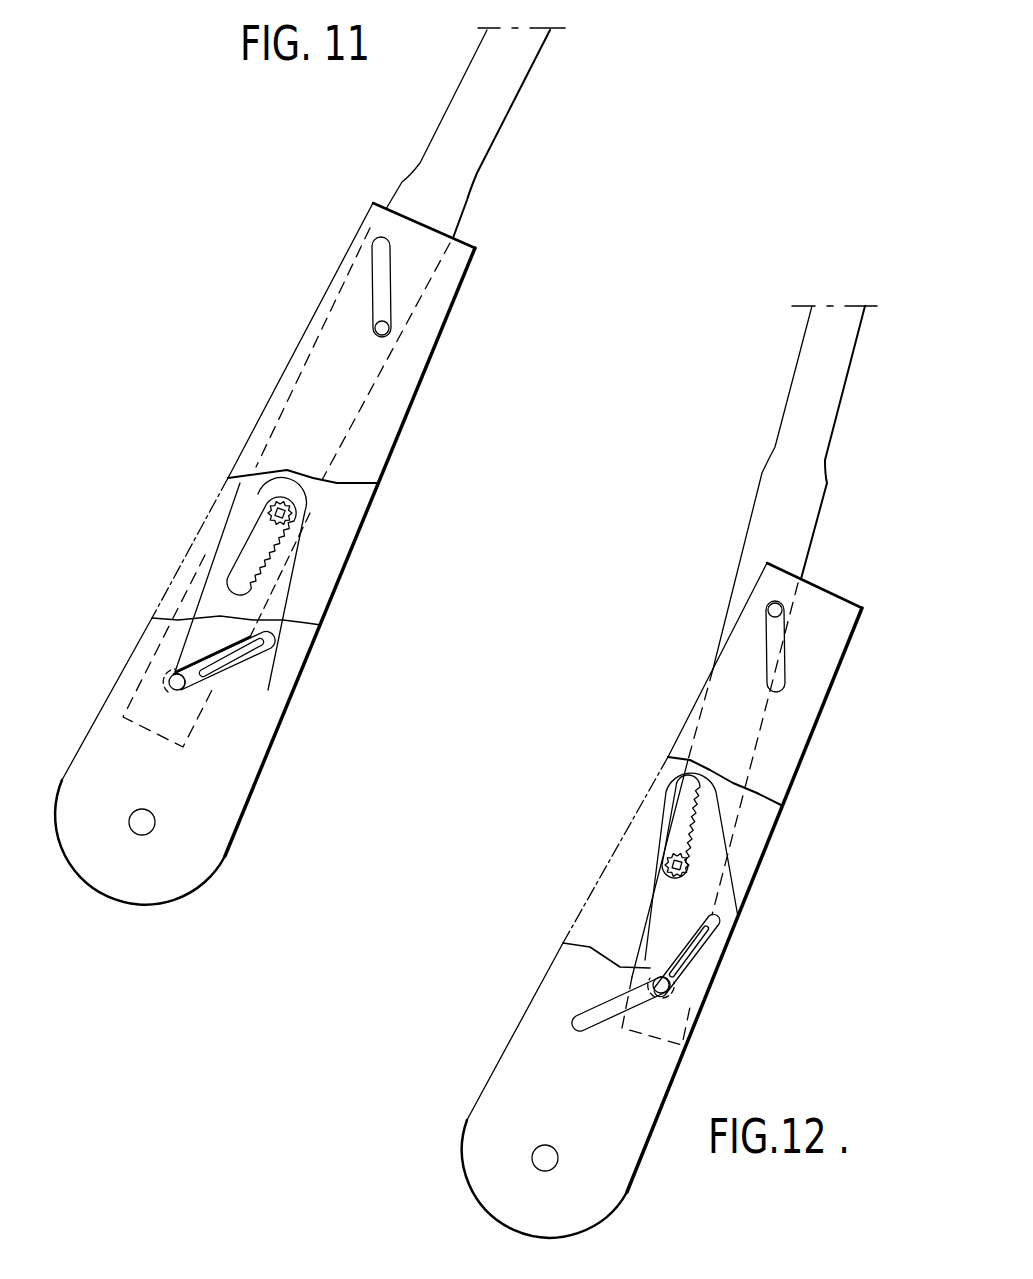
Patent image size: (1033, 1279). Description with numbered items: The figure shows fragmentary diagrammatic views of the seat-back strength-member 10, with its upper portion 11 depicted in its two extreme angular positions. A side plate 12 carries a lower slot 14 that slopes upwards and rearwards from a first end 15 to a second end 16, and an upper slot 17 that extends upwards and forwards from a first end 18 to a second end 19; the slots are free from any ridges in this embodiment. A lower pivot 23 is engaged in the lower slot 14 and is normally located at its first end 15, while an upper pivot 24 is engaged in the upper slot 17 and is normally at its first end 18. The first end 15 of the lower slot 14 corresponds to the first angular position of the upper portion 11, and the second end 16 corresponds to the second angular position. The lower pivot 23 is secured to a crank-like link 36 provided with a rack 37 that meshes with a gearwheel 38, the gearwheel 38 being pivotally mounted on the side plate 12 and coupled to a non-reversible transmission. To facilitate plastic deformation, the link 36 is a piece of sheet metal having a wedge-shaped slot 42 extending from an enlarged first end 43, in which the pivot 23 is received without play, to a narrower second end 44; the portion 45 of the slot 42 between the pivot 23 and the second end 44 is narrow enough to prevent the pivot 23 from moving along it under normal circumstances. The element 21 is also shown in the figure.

In FIG. 11, the strength-member 10 is at (260, 797).
In FIG. 12, the strength-member 10 is at (481, 1093).
In FIG. 11, the upper portion 11 is at (540, 67).
In FIG. 12, the upper portion 11 is at (790, 359).
In FIG. 11, the side plate 12 is at (190, 838).
In FIG. 12, the side plate 12 is at (598, 1178).
In FIG. 11, the lower slot 14 is at (247, 668).
In FIG. 12, the lower slot 14 is at (605, 998).
In FIG. 11, the first end 15 is at (163, 687).
In FIG. 12, the first end 15 is at (575, 1023).
In FIG. 11, the second end 16 is at (287, 637).
In FIG. 12, the second end 16 is at (678, 980).
In FIG. 11, the upper slot 17 is at (392, 287).
In FIG. 12, the upper slot 17 is at (785, 665).
In FIG. 11, the first end 18 is at (385, 337).
In FIG. 12, the first end 18 is at (780, 690).
In FIG. 11, the second end 19 is at (378, 238).
In FIG. 12, the second end 19 is at (773, 603).
In FIG. 11, the blade shank 21 is at (483, 103).
In FIG. 12, the blade shank 21 is at (808, 413).
In FIG. 11, the lower pivot 23 is at (172, 678).
In FIG. 12, the lower pivot 23 is at (667, 990).
In FIG. 11, the upper pivot 24 is at (388, 332).
In FIG. 12, the upper pivot 24 is at (783, 612).
In FIG. 11, the crank-like link 36 is at (280, 592).
In FIG. 12, the crank-like link 36 is at (673, 902).
In FIG. 11, the rack 37 is at (268, 558).
In FIG. 12, the rack 37 is at (700, 828).
In FIG. 11, the gearwheel 38 is at (305, 510).
In FIG. 12, the gearwheel 38 is at (692, 865).
In FIG. 11, the wedge-shaped slot 42 is at (223, 678).
In FIG. 12, the wedge-shaped slot 42 is at (707, 958).
In FIG. 11, the first end 43 is at (187, 688).
In FIG. 12, the first end 43 is at (650, 995).
In FIG. 11, the second end 44 is at (265, 650).
In FIG. 12, the second end 44 is at (713, 917).
In FIG. 11, the portion 45 is at (208, 650).
In FIG. 12, the portion 45 is at (680, 938).